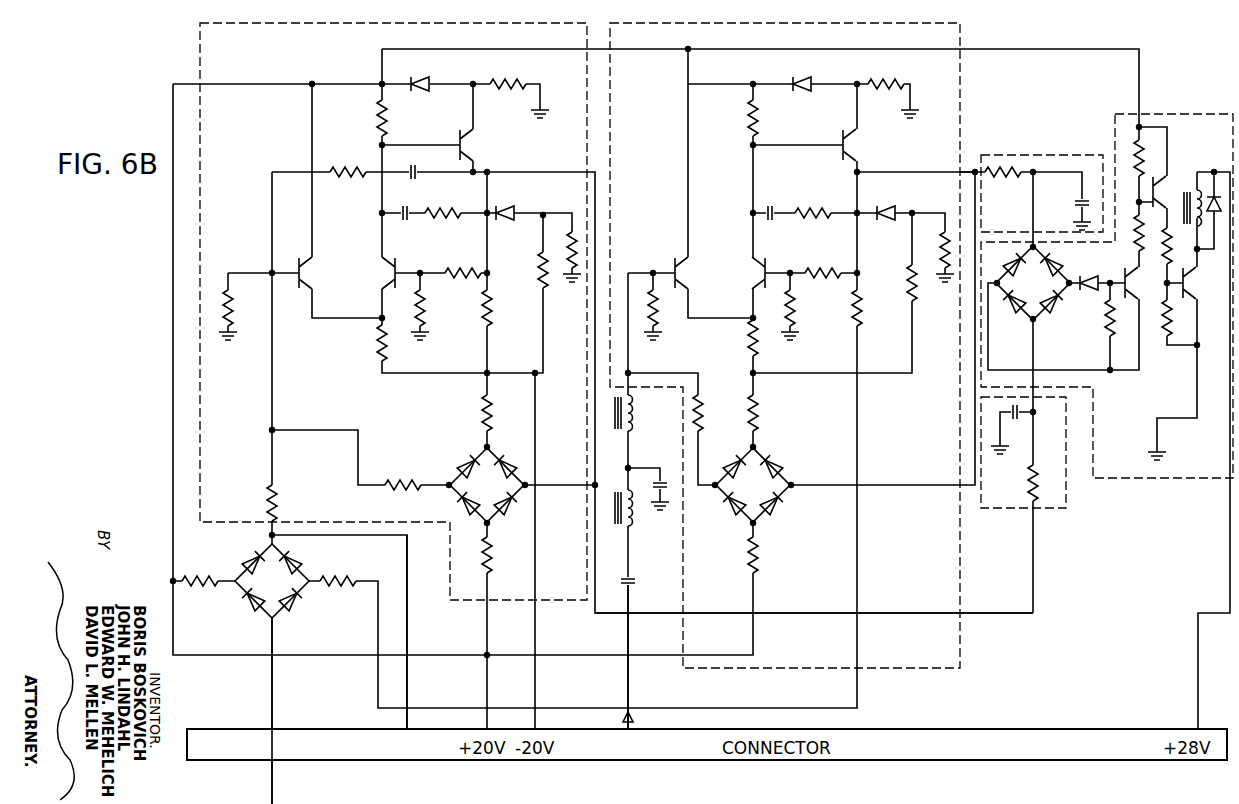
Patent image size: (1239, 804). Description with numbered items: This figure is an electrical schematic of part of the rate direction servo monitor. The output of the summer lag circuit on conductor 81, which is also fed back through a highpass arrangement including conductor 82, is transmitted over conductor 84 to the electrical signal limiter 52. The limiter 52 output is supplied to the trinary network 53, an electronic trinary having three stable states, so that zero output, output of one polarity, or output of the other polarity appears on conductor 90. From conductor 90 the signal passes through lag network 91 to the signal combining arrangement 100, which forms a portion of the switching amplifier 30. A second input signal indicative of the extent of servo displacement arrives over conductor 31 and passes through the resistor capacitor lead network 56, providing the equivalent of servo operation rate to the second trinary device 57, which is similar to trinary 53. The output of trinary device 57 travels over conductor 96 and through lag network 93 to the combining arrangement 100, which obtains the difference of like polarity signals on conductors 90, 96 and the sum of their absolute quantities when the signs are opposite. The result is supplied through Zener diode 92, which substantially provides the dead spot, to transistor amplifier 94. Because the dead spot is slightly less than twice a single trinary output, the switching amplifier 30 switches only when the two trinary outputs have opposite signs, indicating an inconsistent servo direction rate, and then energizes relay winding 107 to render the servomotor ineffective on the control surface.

The switching amplifier 30 is at (1170, 112).
The conductor 31 is at (633, 681).
The limiter 52 is at (282, 588).
The trinary network 53 is at (450, 573).
The resistor capacitor lead network 56 is at (645, 588).
The second trinary device 57 is at (961, 70).
The conductor 81 is at (272, 677).
The conductor 82 is at (408, 688).
The conductor 84 is at (272, 775).
The conductor 90 is at (898, 613).
The lag network 91 is at (1067, 472).
The Zener diode 92 is at (1088, 296).
The lag network 93 is at (1041, 152).
The transistor amplifier 94 is at (1160, 166).
The conductor 96 is at (960, 176).
The signal combining arrangement 100 is at (1048, 292).
The relay winding 107 is at (1195, 190).